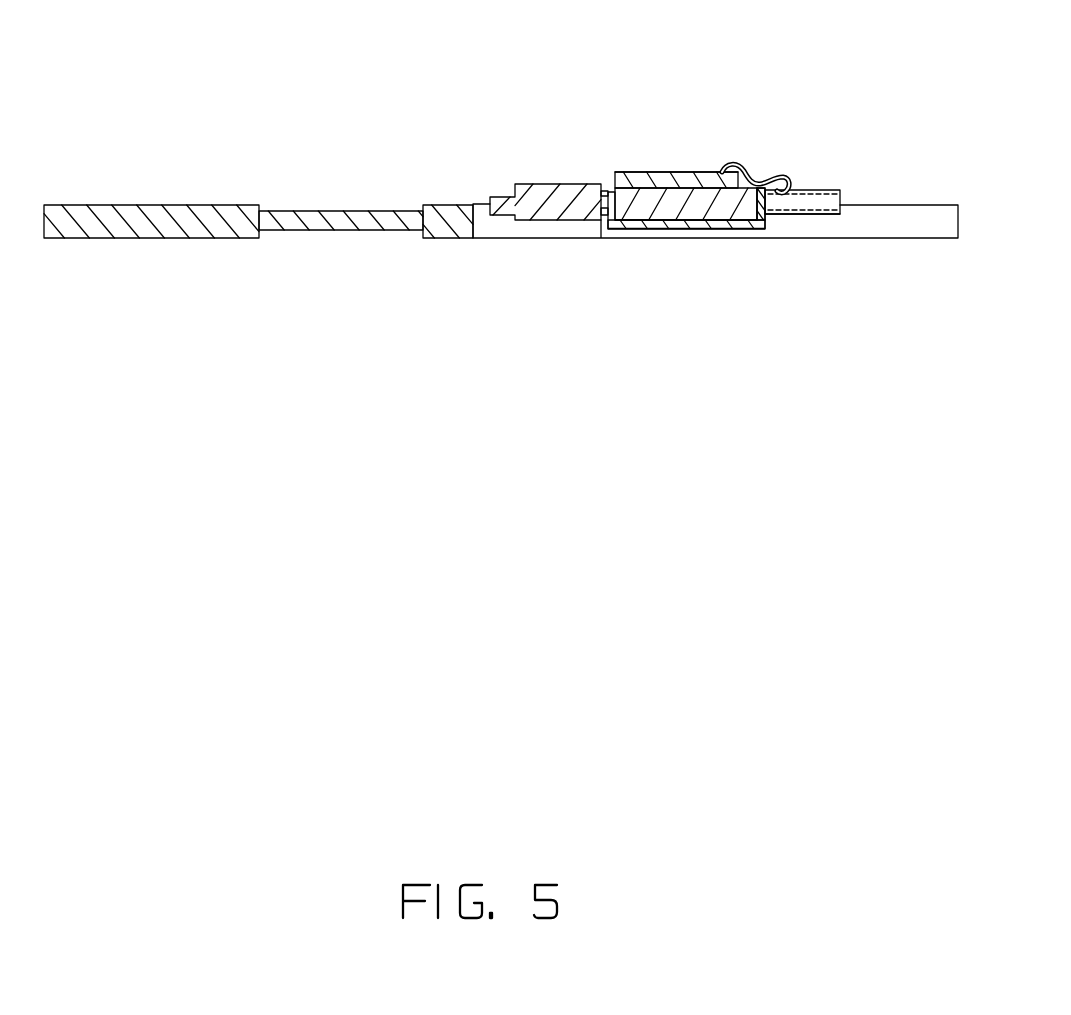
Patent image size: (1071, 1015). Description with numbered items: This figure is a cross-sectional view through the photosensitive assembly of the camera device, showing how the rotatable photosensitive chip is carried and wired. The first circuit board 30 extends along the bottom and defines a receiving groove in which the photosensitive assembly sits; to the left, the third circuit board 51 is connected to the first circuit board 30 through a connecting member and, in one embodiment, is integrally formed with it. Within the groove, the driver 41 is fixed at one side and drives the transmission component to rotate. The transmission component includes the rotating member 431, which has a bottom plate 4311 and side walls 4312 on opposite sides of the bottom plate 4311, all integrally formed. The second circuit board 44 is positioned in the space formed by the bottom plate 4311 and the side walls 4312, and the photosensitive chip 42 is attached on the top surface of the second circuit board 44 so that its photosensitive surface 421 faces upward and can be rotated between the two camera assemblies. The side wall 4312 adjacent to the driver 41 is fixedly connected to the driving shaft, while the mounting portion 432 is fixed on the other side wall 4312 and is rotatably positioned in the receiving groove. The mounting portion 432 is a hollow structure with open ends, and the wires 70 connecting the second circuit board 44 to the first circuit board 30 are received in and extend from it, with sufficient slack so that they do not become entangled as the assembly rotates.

The first circuit board 30 is at (878, 218).
The driver 41 is at (558, 203).
The photosensitive chip 42 is at (672, 180).
The photosensitive surface 421 is at (698, 166).
The rotating member 431 is at (833, 318).
The bottom plate 4311 is at (737, 225).
The side walls 4312 is at (768, 218).
The mounting portion 432 is at (836, 218).
The second circuit board 44 is at (657, 202).
The third circuit board 51 is at (186, 223).
The wires 70 is at (759, 185).